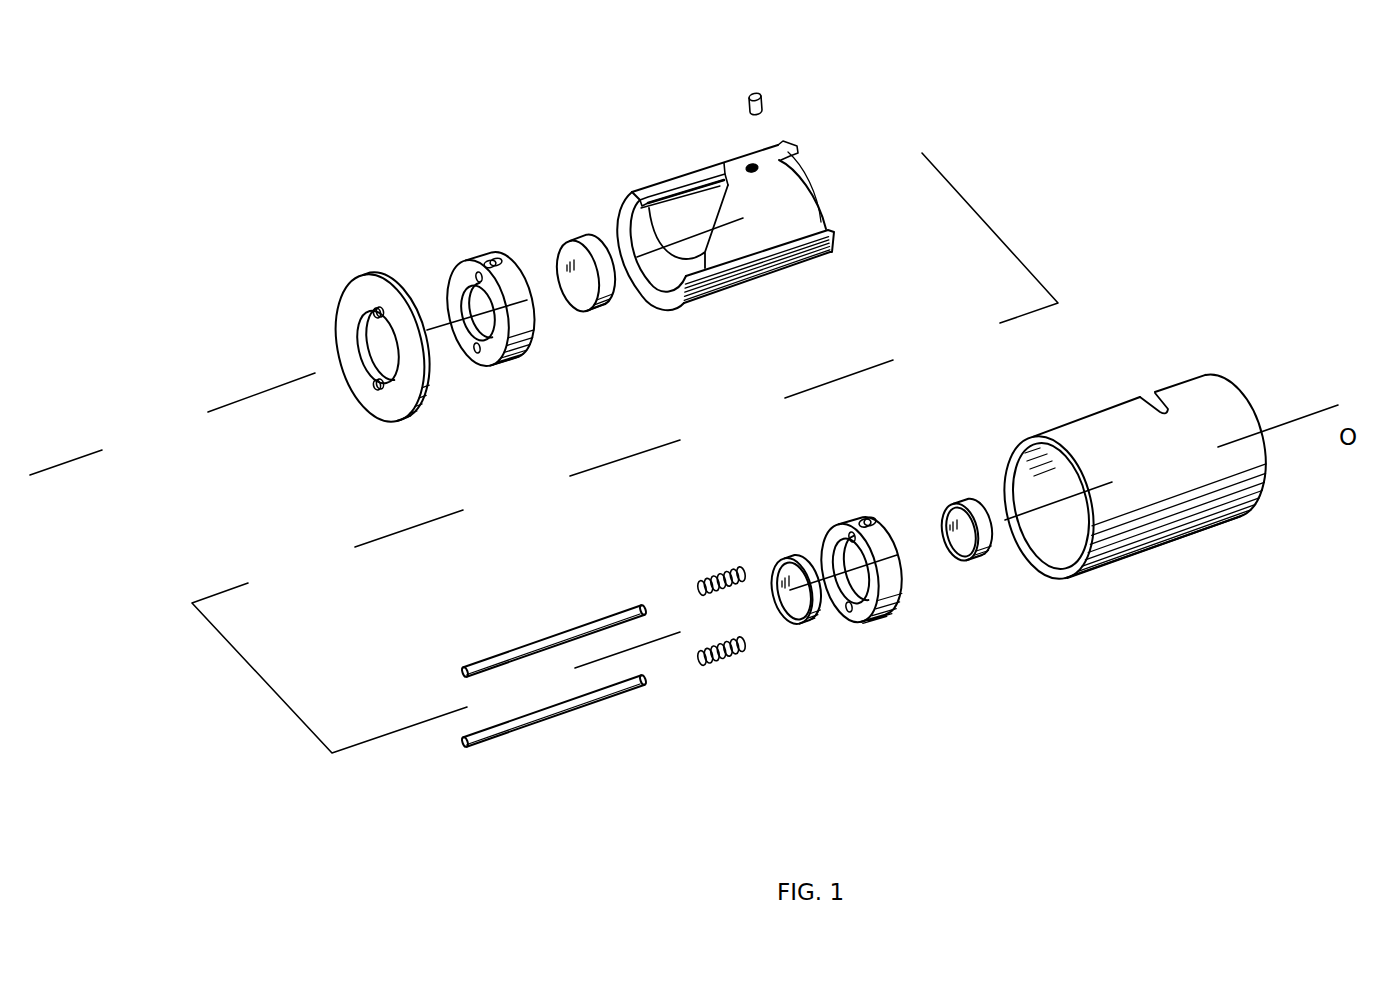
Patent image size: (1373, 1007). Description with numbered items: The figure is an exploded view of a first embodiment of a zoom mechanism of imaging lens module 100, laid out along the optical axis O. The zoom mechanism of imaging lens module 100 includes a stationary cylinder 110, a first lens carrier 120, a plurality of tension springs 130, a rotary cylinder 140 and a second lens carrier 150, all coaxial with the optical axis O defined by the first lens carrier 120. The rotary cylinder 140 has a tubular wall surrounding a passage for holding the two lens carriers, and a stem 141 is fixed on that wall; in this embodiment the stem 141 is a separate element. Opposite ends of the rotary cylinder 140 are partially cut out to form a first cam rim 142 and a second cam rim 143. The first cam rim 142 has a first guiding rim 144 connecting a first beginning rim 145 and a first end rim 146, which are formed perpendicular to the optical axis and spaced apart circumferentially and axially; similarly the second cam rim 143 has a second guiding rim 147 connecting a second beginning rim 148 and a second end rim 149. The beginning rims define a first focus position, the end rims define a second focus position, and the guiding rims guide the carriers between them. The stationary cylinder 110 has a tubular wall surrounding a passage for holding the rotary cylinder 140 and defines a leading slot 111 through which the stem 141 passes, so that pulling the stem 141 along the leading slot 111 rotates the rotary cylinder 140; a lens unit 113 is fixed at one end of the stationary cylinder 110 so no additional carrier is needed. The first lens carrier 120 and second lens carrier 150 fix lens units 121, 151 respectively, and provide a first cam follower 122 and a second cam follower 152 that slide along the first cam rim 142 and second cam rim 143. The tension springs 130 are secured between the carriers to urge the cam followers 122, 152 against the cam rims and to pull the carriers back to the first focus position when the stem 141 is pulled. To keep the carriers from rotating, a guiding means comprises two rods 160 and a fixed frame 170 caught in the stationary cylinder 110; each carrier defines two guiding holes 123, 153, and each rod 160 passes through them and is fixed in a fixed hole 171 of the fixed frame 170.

The zoom mechanism of imaging lens module 100 is at (220, 134).
The stationary cylinder 110 is at (1157, 527).
The leading slot 111 is at (1146, 395).
The lens unit 113 is at (953, 563).
The first lens carrier 120 is at (889, 620).
The lens unit 121 is at (792, 626).
The first cam follower 122 is at (867, 522).
The guiding holes 123 is at (849, 538).
The tension springs 130 is at (700, 572).
The rotary cylinder 140 is at (790, 258).
The stem 141 is at (758, 93).
The first cam rim 142 is at (868, 147).
The second cam rim 143 is at (620, 149).
The first guiding rim 144 is at (822, 200).
The first beginning rim 145 is at (790, 146).
The first end rim 146 is at (860, 178).
The second guiding rim 147 is at (706, 235).
The second beginning rim 148 is at (697, 178).
The second end rim 149 is at (646, 196).
The second lens carrier 150 is at (523, 362).
The lens unit 151 is at (583, 300).
The second cam follower 152 is at (492, 262).
The guiding holes 153 is at (478, 272).
The rods 160 is at (520, 648).
The fixed frame 170 is at (411, 395).
The fixed holes 171 is at (376, 313).